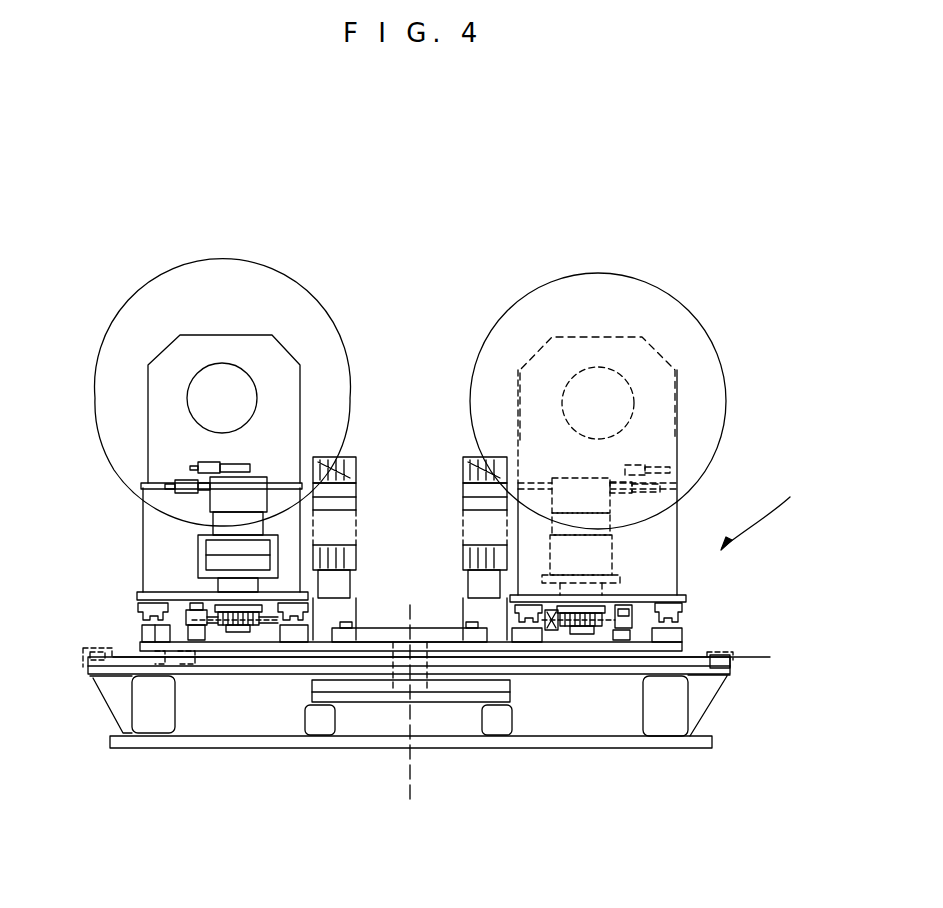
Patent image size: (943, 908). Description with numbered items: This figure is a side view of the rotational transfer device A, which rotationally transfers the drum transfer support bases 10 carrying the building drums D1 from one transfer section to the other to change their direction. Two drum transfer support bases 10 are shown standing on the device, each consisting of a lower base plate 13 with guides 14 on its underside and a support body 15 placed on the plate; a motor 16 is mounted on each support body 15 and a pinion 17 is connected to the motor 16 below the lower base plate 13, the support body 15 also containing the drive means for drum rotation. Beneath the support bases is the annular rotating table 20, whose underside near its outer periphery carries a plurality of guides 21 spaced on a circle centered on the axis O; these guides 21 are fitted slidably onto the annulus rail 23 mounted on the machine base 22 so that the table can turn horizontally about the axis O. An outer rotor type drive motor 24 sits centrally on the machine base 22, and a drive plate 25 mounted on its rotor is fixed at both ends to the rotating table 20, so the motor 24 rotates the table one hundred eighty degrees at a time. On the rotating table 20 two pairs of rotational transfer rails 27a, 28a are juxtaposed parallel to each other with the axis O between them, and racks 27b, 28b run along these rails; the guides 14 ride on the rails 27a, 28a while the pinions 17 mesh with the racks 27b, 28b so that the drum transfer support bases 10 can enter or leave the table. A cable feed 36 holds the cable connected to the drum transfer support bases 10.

The drum transfer support base 10 is at (130, 298).
The building drum D1 is at (215, 292).
The lower base plate 13 is at (142, 594).
The guide 14 is at (140, 608).
The support body 15 is at (163, 542).
The motor 16 is at (250, 500).
The pinion 17 is at (240, 628).
The rotating table 20 is at (602, 651).
The guide 21 is at (85, 660).
The machine base 22 is at (130, 700).
The annulus rail 23 is at (718, 670).
The drive motor 24 is at (458, 682).
The drive plate 25 is at (433, 640).
The rotational transfer rail 27a is at (143, 612).
The rack 27b is at (268, 627).
The rotational transfer rail 28a is at (527, 624).
The rack 28b is at (549, 622).
The cable feed 36 is at (340, 456).
The rotational transfer device A is at (825, 506).
The axis O is at (410, 690).